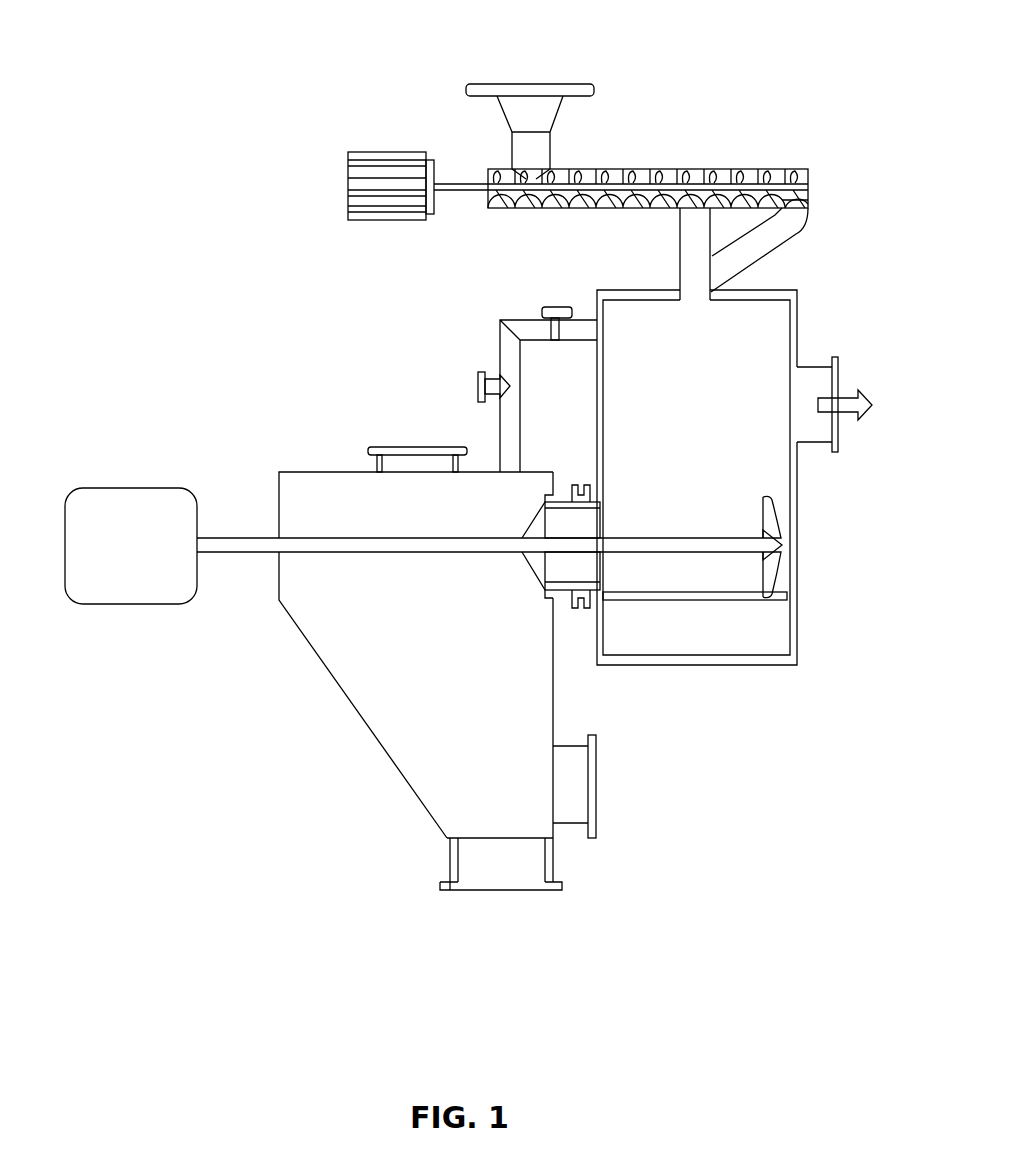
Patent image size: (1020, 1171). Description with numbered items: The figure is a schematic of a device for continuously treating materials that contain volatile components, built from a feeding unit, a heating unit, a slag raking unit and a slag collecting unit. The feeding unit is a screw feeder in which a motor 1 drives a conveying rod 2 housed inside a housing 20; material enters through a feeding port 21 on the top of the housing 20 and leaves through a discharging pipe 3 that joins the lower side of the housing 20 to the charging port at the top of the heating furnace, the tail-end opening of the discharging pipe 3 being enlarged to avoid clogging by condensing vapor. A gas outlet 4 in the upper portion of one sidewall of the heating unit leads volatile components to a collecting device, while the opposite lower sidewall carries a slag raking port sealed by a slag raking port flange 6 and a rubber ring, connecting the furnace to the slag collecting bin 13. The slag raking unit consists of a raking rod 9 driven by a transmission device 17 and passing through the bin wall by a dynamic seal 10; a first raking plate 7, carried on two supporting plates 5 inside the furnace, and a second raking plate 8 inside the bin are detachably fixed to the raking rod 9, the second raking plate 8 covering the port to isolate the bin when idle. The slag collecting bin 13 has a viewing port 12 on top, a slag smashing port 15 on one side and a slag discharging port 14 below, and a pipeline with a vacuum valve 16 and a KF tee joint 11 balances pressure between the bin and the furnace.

The motor 1 is at (392, 157).
The conveying rod 2 is at (787, 168).
The discharging pipe 3 is at (686, 274).
The gas outlet 4 is at (815, 385).
The supporting plate 5 is at (765, 600).
The slag raking port flange 6 is at (570, 493).
The first raking plate 7 is at (766, 527).
The second raking plate 8 is at (537, 505).
The raking rod 9 is at (320, 543).
The dynamic seal 10 is at (280, 537).
The KF tee joint 11 is at (482, 377).
The viewing port 12 is at (413, 458).
The slag collecting bin 13 is at (385, 660).
The slag discharging port 14 is at (440, 880).
The slag smashing port 15 is at (570, 788).
The vacuum valve 16 is at (540, 317).
The transmission device 17 is at (128, 502).
The housing 20 is at (632, 168).
The feeding port 21 is at (556, 95).